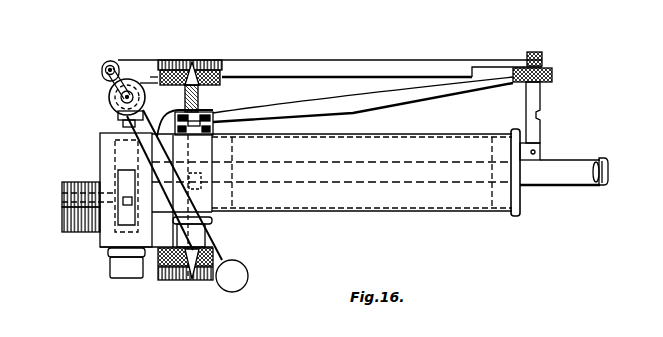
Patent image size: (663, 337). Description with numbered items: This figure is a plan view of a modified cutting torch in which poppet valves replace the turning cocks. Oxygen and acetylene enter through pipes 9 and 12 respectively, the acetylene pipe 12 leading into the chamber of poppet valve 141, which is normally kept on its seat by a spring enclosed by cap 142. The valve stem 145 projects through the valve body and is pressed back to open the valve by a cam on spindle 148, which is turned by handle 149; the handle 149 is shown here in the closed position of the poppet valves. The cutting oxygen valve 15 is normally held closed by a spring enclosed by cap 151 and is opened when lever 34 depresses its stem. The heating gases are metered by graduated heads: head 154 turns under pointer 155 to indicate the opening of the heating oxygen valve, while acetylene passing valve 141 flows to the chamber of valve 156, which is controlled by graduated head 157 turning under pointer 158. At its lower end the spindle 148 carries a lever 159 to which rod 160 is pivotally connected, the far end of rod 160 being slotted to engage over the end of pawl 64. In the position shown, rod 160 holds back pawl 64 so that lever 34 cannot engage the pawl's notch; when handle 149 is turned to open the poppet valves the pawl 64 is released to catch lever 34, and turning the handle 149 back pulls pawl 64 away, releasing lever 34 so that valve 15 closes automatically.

The pipe 9 is at (62, 227).
The pipe 12 is at (62, 187).
The valve 15 is at (208, 113).
The lever 34 is at (395, 98).
The pawl 64 is at (543, 105).
The poppet valve 141 is at (118, 187).
The cap 142 is at (112, 275).
The stem 145 is at (118, 113).
The spindle 148 is at (118, 96).
The handle 149 is at (240, 282).
The cap 151 is at (180, 227).
The graduated head 154 is at (207, 61).
The pointer 155 is at (190, 66).
The valve 156 is at (192, 188).
The graduated head 157 is at (202, 314).
The pointer 158 is at (188, 268).
The lever 159 is at (108, 70).
The rod 160 is at (312, 68).